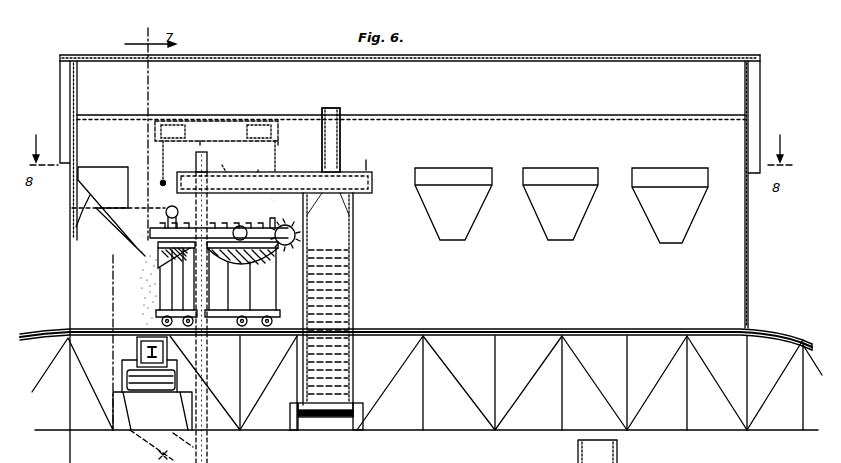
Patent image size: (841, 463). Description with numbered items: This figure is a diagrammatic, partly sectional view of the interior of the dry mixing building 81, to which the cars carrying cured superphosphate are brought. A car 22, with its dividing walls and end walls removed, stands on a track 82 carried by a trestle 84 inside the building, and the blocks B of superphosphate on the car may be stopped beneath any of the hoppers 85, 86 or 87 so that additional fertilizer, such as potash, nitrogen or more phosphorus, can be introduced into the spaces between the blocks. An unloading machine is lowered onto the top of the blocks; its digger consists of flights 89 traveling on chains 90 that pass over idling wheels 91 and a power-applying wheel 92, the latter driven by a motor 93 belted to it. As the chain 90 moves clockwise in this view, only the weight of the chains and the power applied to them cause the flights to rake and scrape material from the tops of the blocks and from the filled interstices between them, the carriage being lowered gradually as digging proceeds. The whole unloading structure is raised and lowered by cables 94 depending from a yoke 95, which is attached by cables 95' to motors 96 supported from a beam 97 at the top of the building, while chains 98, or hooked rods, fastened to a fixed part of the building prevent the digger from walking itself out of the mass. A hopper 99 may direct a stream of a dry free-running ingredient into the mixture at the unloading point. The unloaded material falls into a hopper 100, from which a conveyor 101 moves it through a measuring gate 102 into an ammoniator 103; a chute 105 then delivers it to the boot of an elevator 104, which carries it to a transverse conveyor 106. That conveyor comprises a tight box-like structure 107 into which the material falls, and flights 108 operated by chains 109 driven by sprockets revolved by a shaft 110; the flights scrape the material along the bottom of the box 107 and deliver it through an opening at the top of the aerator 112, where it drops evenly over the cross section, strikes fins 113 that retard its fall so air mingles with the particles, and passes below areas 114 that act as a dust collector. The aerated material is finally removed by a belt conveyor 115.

The dry mixing building 81 is at (768, 108).
The track 82 is at (793, 338).
The trestle 84 is at (770, 397).
The hopper 85 is at (670, 205).
The hopper 86 is at (560, 204).
The hopper 87 is at (453, 204).
The flights 89 is at (140, 233).
The chains 90 is at (216, 228).
The idling wheels 91 is at (244, 232).
The power-applying wheel 92 is at (115, 255).
The motor 93 is at (170, 208).
The cables 94 is at (168, 215).
The yoke 95 is at (137, 164).
The cables 95' is at (292, 139).
The motors 96 is at (260, 121).
The beam 97 is at (112, 114).
The chains 98 is at (82, 200).
The hopper 99 is at (76, 227).
The hopper 100 is at (133, 341).
The conveyor 101 is at (147, 388).
The measuring gate 102 is at (133, 356).
The ammoniator 103 is at (138, 422).
The elevator 104 is at (207, 437).
The chute 105 is at (319, 140).
The transverse conveyor 106 is at (316, 140).
The box-like structure 107 is at (380, 172).
The flights 108 is at (226, 162).
The chains 109 is at (258, 170).
The shaft 110 is at (288, 148).
The aerator 112 is at (360, 283).
The fins 113 is at (357, 305).
The areas 114 is at (357, 218).
The belt conveyor 115 is at (346, 408).
The car 22 is at (284, 288).
The blocks B is at (276, 262).